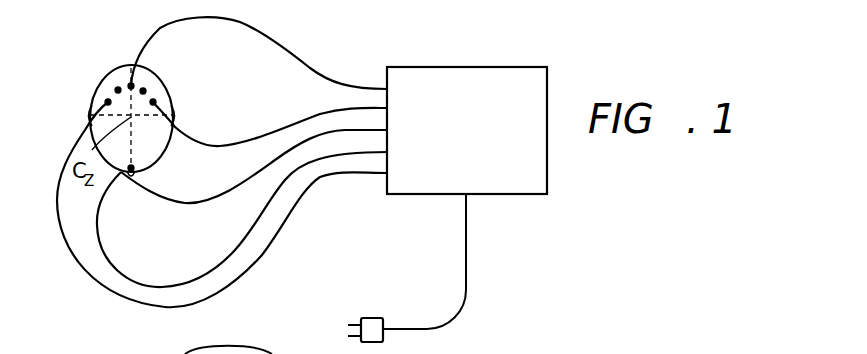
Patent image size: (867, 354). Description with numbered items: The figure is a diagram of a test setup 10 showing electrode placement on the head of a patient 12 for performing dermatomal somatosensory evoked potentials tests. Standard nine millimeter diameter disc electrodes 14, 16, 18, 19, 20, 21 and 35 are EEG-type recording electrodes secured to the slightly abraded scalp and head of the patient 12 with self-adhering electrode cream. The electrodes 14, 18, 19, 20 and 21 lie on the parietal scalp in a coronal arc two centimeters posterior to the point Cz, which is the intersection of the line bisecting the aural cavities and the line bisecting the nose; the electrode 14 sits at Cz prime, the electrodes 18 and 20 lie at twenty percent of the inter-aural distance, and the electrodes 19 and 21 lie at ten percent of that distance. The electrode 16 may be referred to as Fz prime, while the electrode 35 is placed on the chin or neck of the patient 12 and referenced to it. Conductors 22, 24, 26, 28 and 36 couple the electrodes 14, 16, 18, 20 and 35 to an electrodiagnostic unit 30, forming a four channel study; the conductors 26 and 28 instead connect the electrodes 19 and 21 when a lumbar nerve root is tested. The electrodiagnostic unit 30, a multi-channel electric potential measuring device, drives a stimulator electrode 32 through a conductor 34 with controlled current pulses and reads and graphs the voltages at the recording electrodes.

The test setup 10 is at (641, 38).
The patient 12 is at (116, 64).
The disc electrode 14 is at (131, 86).
The disc electrode 16 is at (131, 168).
The disc electrode 18 is at (153, 102).
The disc electrode 19 is at (143, 91).
The disc electrode 20 is at (108, 102).
The disc electrode 21 is at (118, 90).
The conductor 22 is at (337, 80).
The conductor 24 is at (193, 203).
The conductor 26 is at (287, 127).
The conductor 28 is at (127, 304).
The electrodiagnostic unit 30 is at (510, 66).
The stimulator electrode 32 is at (372, 318).
The conductor 34 is at (467, 258).
The disc electrode 35 is at (131, 178).
The conductor 36 is at (182, 283).